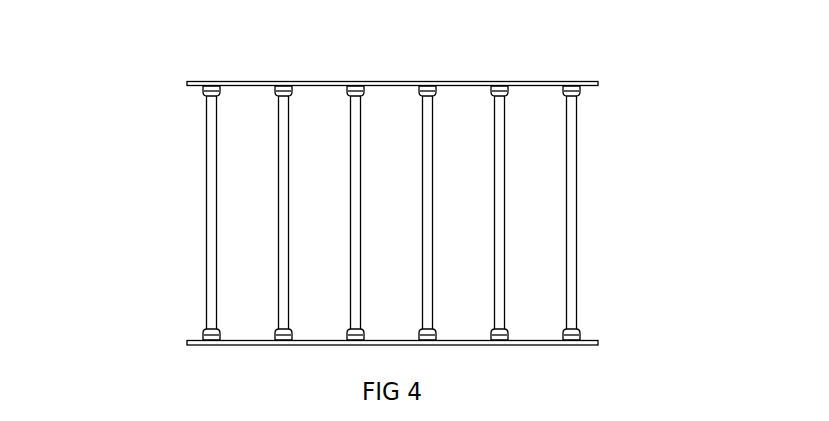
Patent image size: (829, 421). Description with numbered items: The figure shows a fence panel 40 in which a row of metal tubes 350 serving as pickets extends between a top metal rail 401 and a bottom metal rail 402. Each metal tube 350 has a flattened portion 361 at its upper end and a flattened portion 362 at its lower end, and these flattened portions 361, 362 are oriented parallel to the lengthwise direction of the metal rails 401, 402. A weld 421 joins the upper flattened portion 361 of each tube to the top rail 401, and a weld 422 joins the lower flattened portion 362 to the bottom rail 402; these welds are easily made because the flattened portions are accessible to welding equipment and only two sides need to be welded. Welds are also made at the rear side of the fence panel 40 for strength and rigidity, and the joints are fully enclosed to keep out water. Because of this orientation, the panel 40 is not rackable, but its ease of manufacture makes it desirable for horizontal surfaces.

The fence panel 40 is at (468, 60).
The metal rail 401 is at (317, 110).
The metal rail 402 is at (317, 374).
The metal tube 350 is at (141, 213).
The flattened portion 361 is at (153, 127).
The flattened portion 362 is at (154, 318).
The weld 421 is at (634, 127).
The weld 422 is at (635, 310).